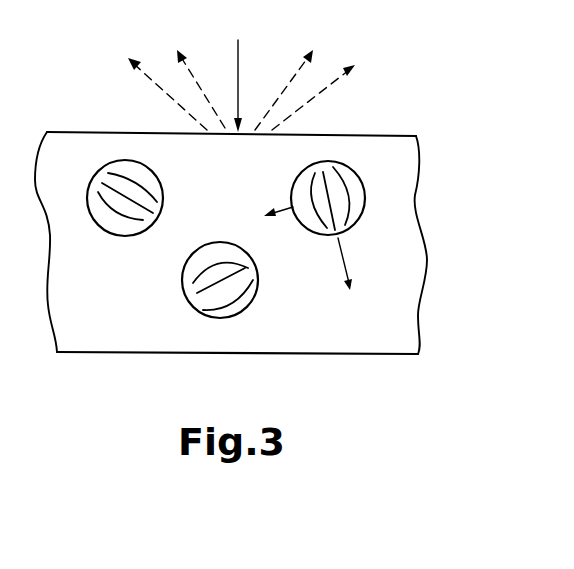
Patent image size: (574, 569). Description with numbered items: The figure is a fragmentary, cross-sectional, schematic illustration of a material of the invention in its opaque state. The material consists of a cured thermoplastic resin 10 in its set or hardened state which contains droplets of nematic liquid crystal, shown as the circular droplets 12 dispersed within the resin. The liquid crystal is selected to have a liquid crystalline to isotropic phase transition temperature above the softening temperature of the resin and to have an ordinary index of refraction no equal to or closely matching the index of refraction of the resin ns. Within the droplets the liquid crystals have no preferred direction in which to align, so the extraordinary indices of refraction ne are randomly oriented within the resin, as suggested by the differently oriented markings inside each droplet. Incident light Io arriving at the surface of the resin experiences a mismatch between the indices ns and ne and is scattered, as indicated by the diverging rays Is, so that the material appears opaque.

The cured thermoplastic resin 10 is at (407, 157).
The birefringent particle 12 is at (362, 200).
The incident light Io is at (241, 67).
The scattered light Is is at (241, 82).
The ordinary index of refraction no is at (273, 201).
The extraordinary index of refraction ne is at (334, 269).
The index of refraction of the resin ns is at (69, 329).